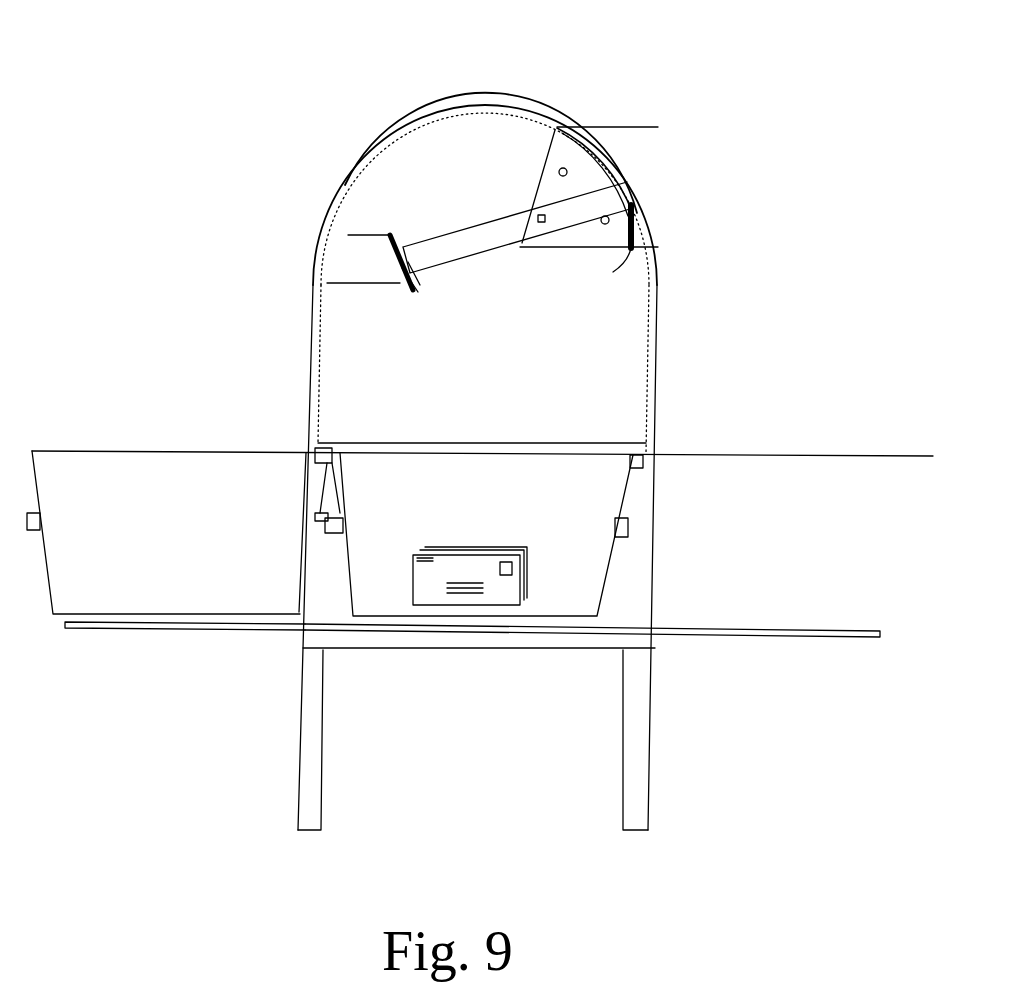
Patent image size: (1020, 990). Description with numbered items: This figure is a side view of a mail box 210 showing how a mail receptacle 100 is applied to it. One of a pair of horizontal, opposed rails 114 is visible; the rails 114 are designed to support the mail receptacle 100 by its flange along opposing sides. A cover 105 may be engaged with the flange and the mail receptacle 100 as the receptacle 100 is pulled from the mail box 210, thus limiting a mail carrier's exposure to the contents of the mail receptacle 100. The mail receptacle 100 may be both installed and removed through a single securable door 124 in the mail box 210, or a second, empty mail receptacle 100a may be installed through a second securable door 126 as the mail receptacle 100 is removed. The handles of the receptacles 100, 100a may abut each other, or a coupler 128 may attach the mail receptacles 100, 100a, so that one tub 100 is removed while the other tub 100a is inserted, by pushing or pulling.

The mail box 210 is at (338, 108).
The mail receptacle 100 is at (553, 600).
The second mail receptacle 100a is at (158, 470).
The coupler 128 is at (321, 512).
The horizontal rail 114 is at (582, 447).
The cover 105 is at (807, 458).
The second securable door 126 is at (270, 627).
The securable door 124 is at (793, 637).